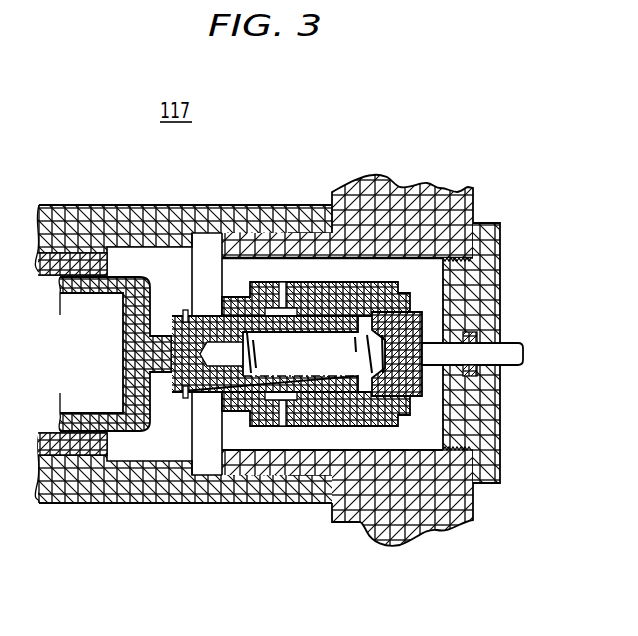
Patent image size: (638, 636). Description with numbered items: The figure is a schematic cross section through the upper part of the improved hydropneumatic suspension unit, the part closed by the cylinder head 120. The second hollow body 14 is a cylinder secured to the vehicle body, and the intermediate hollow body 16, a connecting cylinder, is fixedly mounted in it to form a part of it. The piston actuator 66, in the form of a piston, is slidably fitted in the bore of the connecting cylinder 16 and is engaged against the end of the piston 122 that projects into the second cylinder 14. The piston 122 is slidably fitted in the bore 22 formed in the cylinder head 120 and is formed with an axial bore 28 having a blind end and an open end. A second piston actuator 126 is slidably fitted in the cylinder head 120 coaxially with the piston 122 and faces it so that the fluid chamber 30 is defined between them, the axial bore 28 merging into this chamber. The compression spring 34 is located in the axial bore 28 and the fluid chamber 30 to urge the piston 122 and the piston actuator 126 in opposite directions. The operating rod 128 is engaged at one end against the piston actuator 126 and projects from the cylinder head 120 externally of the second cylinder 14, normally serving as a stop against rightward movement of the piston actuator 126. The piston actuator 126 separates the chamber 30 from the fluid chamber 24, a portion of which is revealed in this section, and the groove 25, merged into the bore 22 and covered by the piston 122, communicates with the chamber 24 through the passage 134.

The second hollow body 14 is at (123, 217).
The intermediate hollow body 16 is at (73, 260).
The piston actuator 66 is at (78, 295).
The bore 22 is at (310, 317).
The fluid chamber 24 is at (373, 268).
The compression spring 34 is at (400, 293).
The passage 134 is at (280, 290).
The groove 25 is at (297, 310).
The axial bore 28 is at (268, 397).
The piston 122 is at (243, 387).
The fluid chamber 30 is at (365, 397).
The cylinder head 120 is at (353, 417).
The operating rod 128 is at (512, 342).
The piston actuator 126 is at (423, 387).